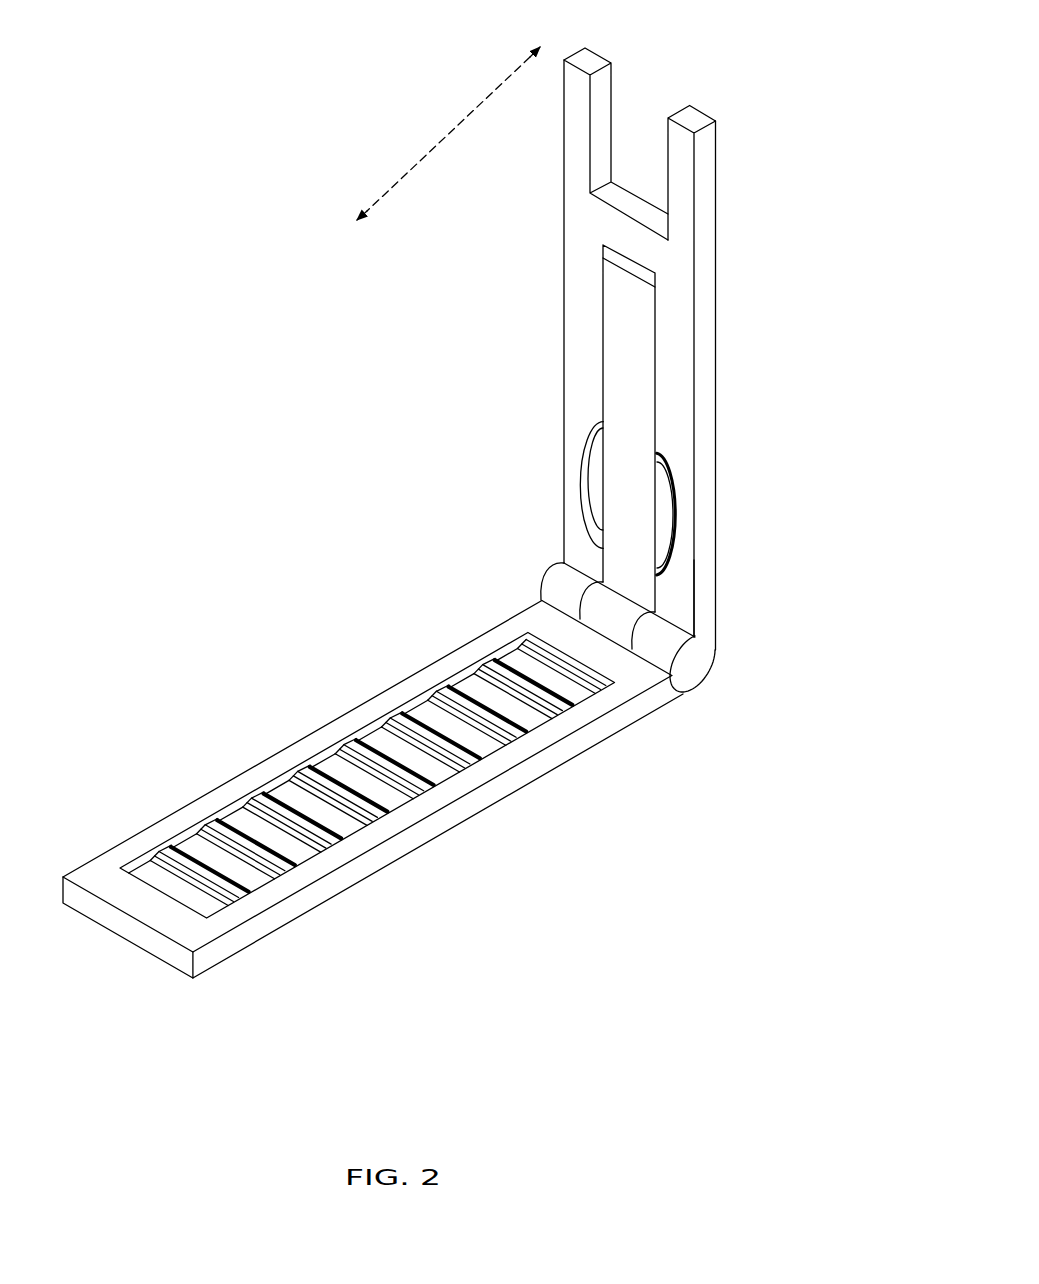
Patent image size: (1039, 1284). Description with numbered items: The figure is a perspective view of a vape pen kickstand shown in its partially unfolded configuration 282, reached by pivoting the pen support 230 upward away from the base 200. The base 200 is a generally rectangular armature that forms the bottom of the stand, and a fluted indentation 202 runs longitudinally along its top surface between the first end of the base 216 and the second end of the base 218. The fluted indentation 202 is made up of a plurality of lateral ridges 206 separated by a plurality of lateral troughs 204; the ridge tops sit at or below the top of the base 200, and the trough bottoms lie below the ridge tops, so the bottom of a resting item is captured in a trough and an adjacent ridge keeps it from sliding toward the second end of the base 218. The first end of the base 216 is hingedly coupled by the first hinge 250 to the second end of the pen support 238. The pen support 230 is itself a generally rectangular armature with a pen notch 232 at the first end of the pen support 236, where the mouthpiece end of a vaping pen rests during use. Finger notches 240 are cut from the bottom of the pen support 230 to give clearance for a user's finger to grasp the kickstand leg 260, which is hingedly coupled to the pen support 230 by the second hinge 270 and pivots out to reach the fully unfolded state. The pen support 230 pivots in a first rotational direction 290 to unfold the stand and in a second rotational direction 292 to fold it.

The base 200 is at (430, 829).
The fluted indentation 202 is at (492, 594).
The plurality of lateral troughs 204 is at (535, 723).
The plurality of lateral ridges 206 is at (328, 840).
The first end of the base 216 is at (690, 740).
The second end of the base 218 is at (208, 990).
The pen support 230 is at (712, 398).
The pen notch 232 is at (608, 107).
The first end of the pen support 236 is at (772, 125).
The second end of the pen support 238 is at (772, 601).
The finger notches 240 is at (668, 515).
The first hinge 250 is at (688, 672).
The kickstand leg 260 is at (612, 368).
The second hinge 270 is at (648, 275).
The partially unfolded configuration 282 is at (300, 347).
The first rotational direction 290 is at (461, 111).
The second rotational direction 292 is at (381, 231).